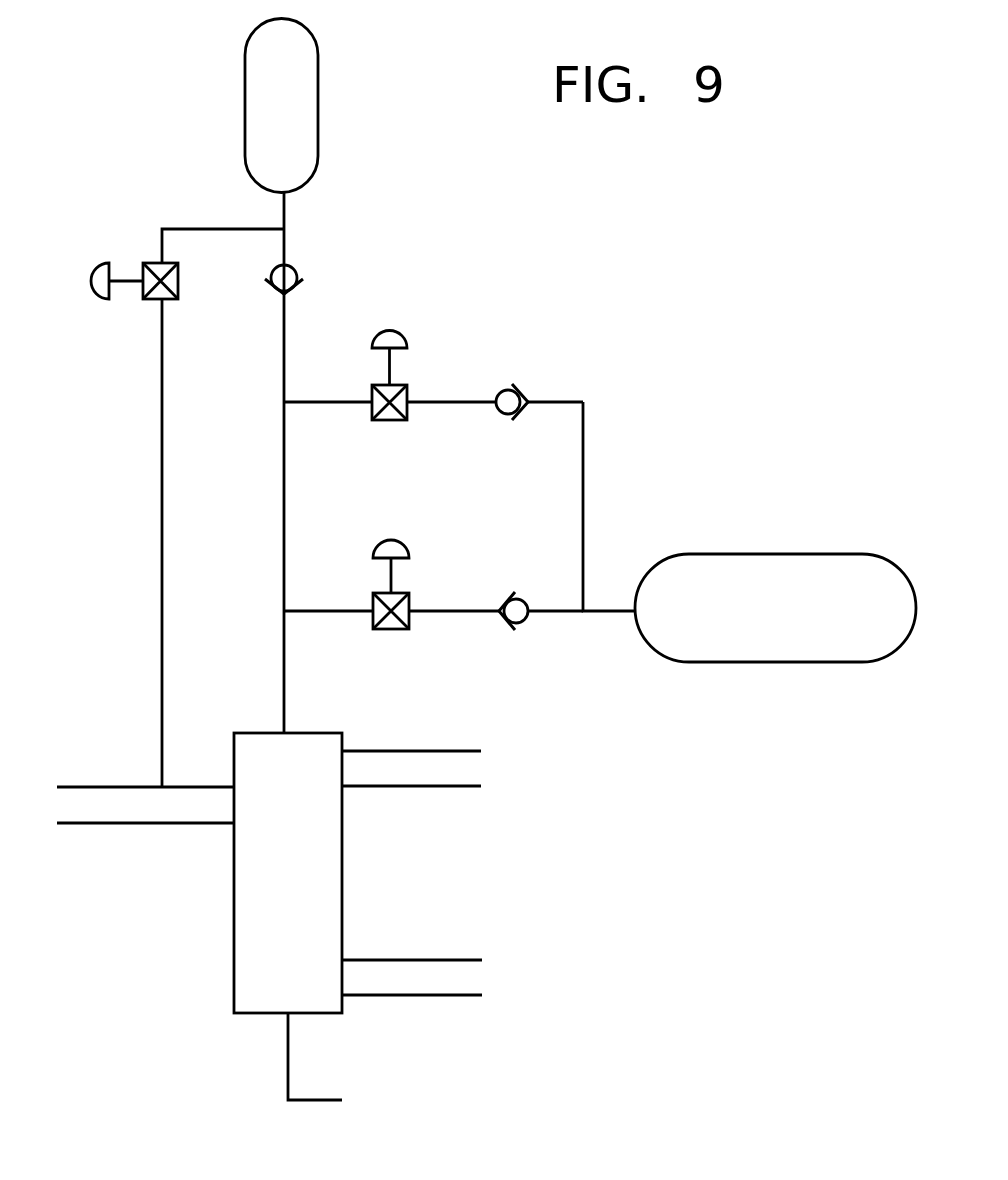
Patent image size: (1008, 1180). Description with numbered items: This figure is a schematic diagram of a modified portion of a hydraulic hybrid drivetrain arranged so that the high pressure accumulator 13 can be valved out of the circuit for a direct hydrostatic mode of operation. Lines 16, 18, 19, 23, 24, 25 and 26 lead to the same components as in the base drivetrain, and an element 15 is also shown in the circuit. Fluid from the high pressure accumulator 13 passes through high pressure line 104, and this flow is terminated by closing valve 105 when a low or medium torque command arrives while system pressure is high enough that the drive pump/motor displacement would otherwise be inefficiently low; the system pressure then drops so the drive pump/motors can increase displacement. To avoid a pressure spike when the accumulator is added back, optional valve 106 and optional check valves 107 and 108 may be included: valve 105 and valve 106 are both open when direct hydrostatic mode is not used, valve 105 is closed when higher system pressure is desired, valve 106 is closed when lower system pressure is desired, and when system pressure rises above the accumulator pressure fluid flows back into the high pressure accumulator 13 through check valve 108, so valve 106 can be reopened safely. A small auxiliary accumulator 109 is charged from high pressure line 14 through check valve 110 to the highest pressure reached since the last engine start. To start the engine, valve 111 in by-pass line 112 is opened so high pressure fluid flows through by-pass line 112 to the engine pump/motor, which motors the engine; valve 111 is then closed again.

The high pressure accumulator 13 is at (790, 622).
The high pressure line 14 is at (285, 682).
The processing chamber 15 is at (299, 865).
The line 16 is at (112, 787).
The line 18 is at (288, 1063).
The line 19 is at (187, 823).
The line 23 is at (423, 751).
The line 24 is at (413, 960).
The line 25 is at (423, 786).
The line 26 is at (402, 995).
The high pressure line 104 is at (609, 610).
The valve 105 is at (391, 538).
The optional valve 106 is at (392, 333).
The optional check valve 107 is at (520, 389).
The optional check valve 108 is at (510, 624).
The auxiliary accumulator 109 is at (300, 115).
The check valve 110 is at (297, 266).
The valve 111 is at (96, 268).
The by-pass line 112 is at (187, 508).